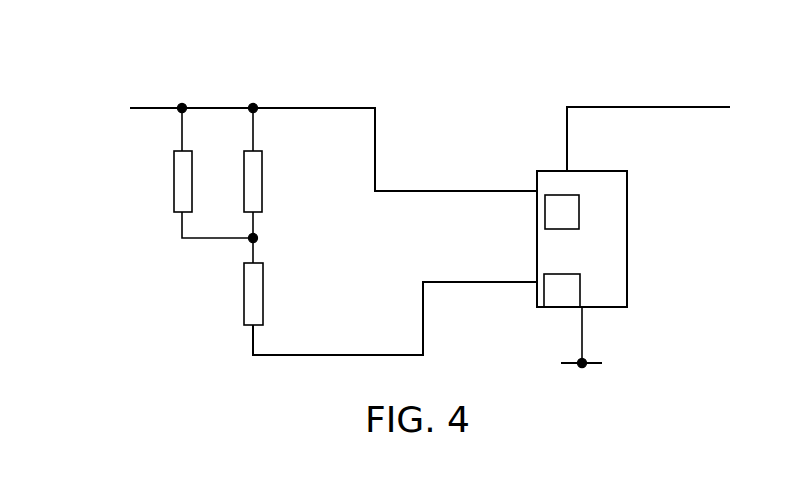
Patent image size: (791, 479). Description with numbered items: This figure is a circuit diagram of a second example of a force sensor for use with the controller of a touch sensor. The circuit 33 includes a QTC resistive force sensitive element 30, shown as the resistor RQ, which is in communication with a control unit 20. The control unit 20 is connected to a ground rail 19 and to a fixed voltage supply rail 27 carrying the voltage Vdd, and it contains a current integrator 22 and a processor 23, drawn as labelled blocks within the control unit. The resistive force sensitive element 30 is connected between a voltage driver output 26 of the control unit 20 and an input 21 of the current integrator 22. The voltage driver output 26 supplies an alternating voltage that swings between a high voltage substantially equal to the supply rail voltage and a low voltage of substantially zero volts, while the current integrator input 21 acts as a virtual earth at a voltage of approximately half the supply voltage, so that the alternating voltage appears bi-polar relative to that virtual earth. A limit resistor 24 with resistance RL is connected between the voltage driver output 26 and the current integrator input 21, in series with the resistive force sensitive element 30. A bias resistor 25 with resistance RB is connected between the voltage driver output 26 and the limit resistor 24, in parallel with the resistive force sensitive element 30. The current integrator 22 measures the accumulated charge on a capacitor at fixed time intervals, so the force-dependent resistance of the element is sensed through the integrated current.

The circuit 33 is at (108, 108).
The resistive force sensitive element 30 is at (174, 183).
The bias resistor 25 is at (262, 183).
The limit resistor 24 is at (244, 299).
The control unit 20 is at (627, 237).
The processor 23 is at (562, 212).
The current integrator 22 is at (562, 290).
The fixed voltage supply rail 27 is at (637, 107).
The voltage driver output 26 is at (537, 191).
The current integrator input 21 is at (537, 284).
The ground rail 19 is at (593, 363).